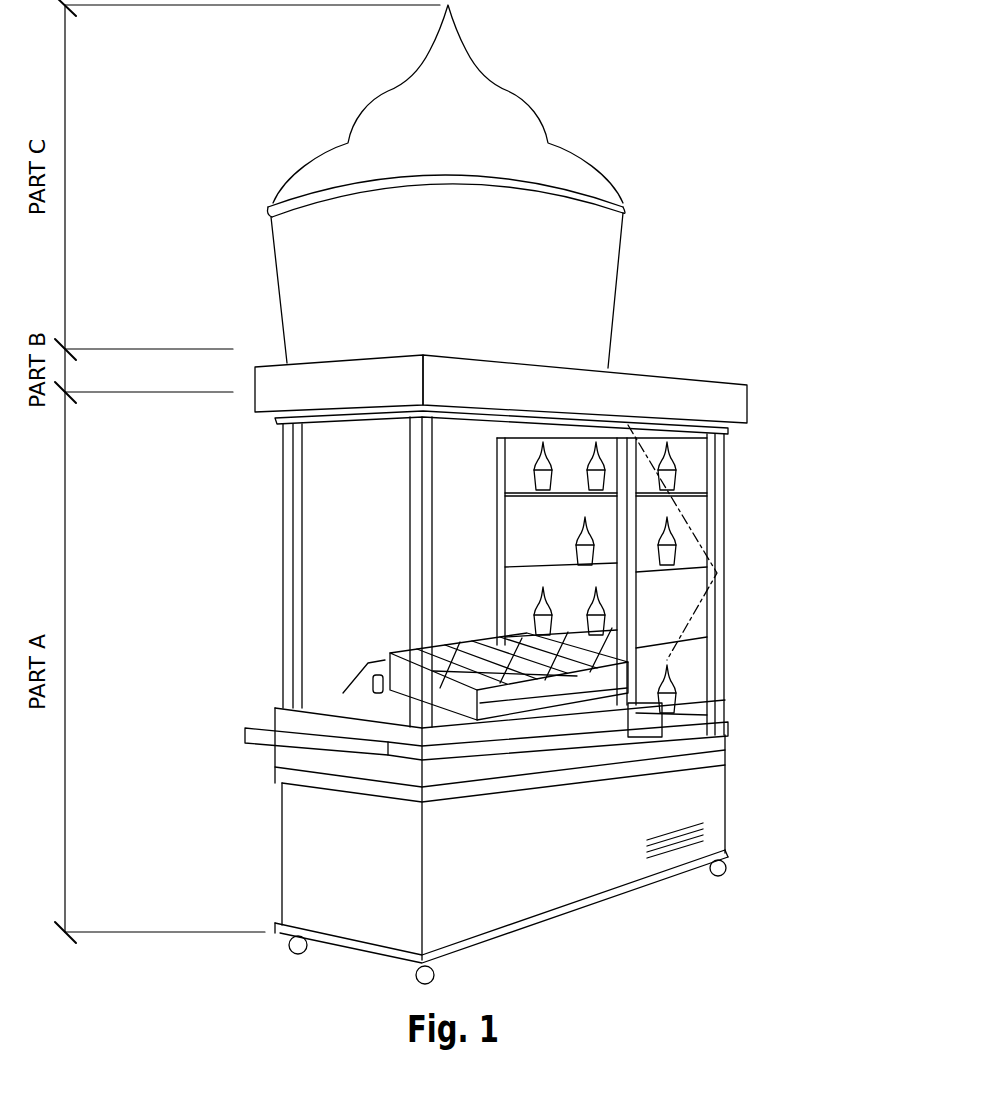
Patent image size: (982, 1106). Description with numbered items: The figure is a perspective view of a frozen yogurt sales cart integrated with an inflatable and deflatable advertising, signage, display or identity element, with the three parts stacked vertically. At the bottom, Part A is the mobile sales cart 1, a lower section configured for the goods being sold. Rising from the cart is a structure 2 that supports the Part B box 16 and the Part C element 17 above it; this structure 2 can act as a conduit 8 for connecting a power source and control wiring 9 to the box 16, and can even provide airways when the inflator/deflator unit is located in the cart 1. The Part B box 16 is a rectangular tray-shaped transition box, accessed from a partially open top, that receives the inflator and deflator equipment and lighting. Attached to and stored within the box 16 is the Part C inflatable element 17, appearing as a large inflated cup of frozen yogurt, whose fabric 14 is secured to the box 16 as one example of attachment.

The mobile sales cart 1 is at (486, 806).
The structure 2 is at (561, 576).
The conduit 8 is at (565, 576).
The control wiring 9 is at (565, 570).
The Part C fabric 14 is at (516, 127).
The Part B box 16 is at (681, 397).
The Part C inflatable advertising element 17 is at (447, 233).